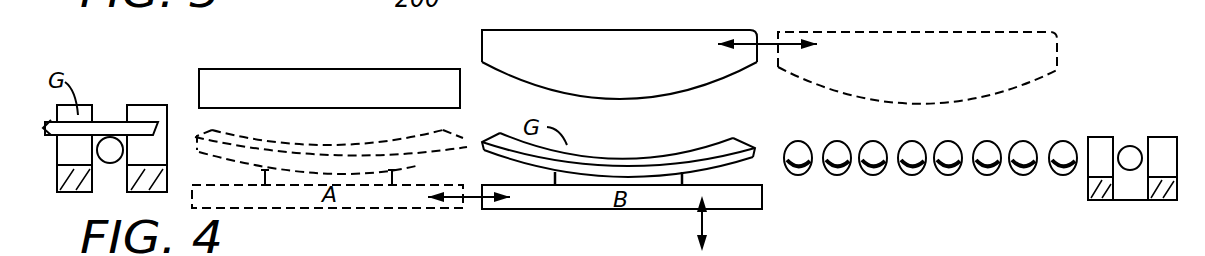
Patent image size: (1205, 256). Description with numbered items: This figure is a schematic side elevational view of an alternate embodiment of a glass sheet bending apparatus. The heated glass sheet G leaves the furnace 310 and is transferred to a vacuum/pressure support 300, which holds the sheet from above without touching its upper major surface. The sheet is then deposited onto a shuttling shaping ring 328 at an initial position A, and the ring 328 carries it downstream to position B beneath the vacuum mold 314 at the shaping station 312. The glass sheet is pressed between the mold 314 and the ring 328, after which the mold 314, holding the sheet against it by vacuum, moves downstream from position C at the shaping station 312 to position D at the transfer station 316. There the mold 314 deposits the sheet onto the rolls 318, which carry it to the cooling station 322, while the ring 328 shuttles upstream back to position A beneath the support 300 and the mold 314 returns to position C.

The vacuum/pressure support 300 is at (427, 70).
The furnace 310 is at (118, 76).
The shaping station 312 is at (545, 22).
The vacuum mold 314 is at (647, 100).
The transfer station 316 is at (1005, 21).
The rolls 318 is at (930, 184).
The cooling station 322 is at (1143, 86).
The shuttling shaping ring 328 is at (403, 148).